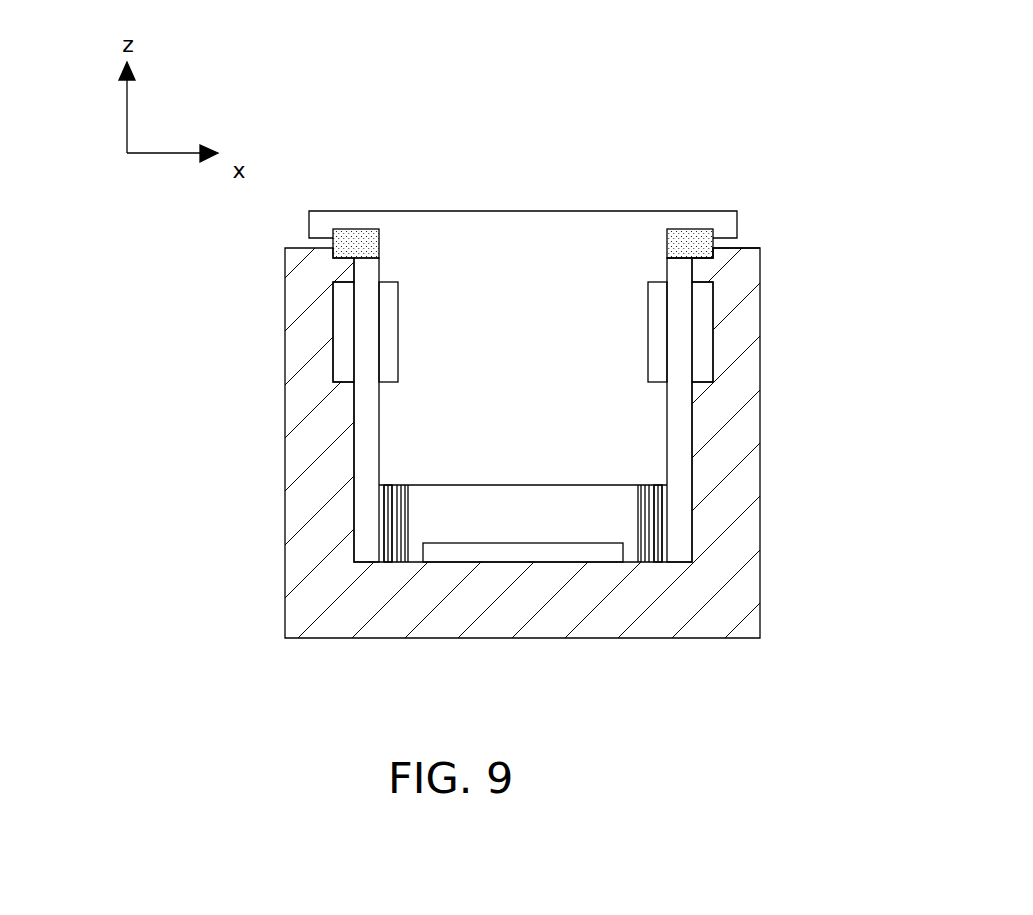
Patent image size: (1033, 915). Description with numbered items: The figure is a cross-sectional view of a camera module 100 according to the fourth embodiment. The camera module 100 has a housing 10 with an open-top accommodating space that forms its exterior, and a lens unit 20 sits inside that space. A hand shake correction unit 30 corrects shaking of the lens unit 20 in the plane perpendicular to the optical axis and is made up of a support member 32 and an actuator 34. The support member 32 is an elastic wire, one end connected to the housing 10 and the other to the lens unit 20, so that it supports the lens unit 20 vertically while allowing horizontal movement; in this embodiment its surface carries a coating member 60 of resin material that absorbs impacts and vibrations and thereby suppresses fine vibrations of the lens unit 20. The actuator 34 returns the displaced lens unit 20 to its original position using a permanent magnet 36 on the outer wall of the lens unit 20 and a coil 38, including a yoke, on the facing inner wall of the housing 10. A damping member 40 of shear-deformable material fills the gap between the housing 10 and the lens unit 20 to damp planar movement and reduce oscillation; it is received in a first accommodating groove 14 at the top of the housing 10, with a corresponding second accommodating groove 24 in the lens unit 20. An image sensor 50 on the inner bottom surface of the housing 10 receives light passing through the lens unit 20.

The camera module 100 is at (640, 122).
The housing 10 is at (745, 383).
The first accommodating groove 14 is at (712, 253).
The lens unit 20 is at (515, 246).
The second accommodating groove 24 is at (711, 232).
The hand shake correction unit 30 is at (123, 313).
The support member 32 is at (393, 505).
The actuator 34 is at (187, 282).
The permanent magnet 36 is at (388, 355).
The coil 38 is at (340, 305).
The damping member 40 is at (692, 238).
The image sensor 50 is at (523, 552).
The coating member 60 is at (384, 525).